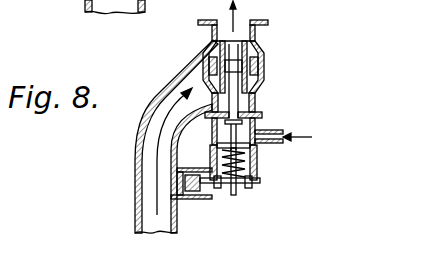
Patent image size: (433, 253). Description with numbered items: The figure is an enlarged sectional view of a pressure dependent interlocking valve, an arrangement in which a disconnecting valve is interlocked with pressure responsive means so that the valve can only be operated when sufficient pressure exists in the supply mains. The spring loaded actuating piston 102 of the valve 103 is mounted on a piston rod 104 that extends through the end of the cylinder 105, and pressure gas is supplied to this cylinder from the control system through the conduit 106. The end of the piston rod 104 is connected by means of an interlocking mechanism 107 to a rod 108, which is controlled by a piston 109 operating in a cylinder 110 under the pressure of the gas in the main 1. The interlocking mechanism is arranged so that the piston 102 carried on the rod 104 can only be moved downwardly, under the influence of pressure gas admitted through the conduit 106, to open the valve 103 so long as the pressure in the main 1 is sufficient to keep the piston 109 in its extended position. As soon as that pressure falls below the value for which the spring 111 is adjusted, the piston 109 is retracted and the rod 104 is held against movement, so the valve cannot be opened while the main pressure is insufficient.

The main 1 is at (135, 164).
The spring loaded actuating piston 102 is at (256, 158).
The valve 103 is at (265, 69).
The piston rod 104 is at (250, 127).
The cylinder 105 is at (257, 183).
The conduit 106 is at (278, 143).
The interlocking mechanism 107 is at (236, 193).
The rod 108 is at (212, 190).
The piston 109 is at (185, 170).
The cylinder 110 is at (179, 196).
The spring 111 is at (200, 190).